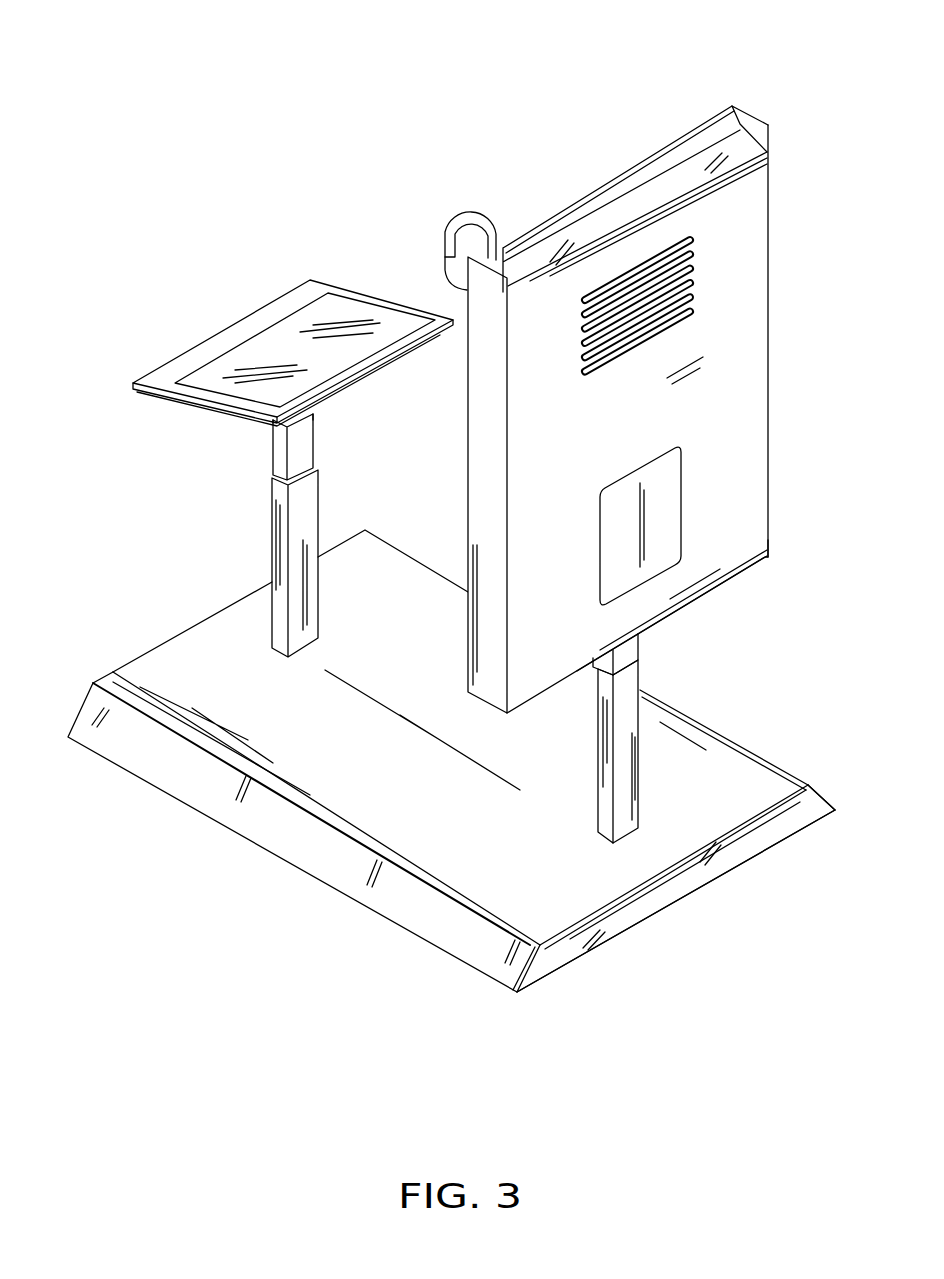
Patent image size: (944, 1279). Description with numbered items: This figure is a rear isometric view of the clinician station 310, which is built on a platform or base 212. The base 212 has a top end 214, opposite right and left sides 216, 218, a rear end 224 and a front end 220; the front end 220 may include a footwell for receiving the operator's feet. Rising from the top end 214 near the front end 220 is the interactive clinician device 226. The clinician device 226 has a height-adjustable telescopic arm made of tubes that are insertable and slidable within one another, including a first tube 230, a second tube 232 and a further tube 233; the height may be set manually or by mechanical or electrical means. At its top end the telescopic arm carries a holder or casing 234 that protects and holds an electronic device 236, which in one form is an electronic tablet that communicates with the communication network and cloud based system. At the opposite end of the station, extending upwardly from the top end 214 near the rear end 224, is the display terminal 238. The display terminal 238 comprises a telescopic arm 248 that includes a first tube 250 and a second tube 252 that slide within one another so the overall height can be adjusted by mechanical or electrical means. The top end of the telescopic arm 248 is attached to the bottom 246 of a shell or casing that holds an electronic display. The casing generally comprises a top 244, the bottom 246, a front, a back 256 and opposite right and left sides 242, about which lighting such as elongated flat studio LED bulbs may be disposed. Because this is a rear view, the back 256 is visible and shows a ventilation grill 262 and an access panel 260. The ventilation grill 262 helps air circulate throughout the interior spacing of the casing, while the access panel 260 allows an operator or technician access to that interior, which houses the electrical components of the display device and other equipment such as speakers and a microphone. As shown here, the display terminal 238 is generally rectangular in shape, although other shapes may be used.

The exercise stand assembly 310 is at (165, 178).
The display terminal 238 is at (557, 76).
The top 244 is at (742, 118).
The right and left sides 242 is at (785, 182).
The ventilation grill 262 is at (705, 263).
The back 256 is at (738, 330).
The access panel 260 is at (662, 515).
The bottom 246 is at (767, 565).
The second tube 252 is at (632, 656).
The first tube 250 is at (628, 707).
The telescopic arm 248 is at (650, 752).
The left side 218 is at (783, 765).
The rear end 224 is at (773, 838).
The top end 214 is at (566, 910).
The right side 216 is at (496, 938).
The base 212 is at (290, 907).
The front end 220 is at (113, 666).
The interactive clinician device 226 is at (340, 240).
The electronic device 236 is at (355, 310).
The holder or casing 234 is at (205, 348).
The upper telescoping post 233 is at (316, 414).
The second tube 232 is at (278, 452).
The first tube 230 is at (307, 528).